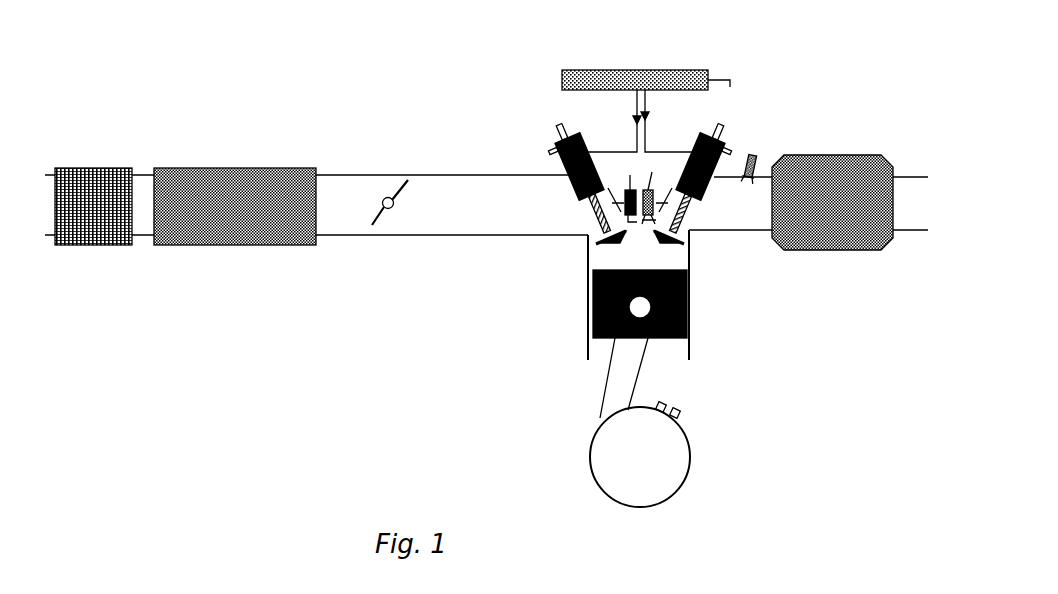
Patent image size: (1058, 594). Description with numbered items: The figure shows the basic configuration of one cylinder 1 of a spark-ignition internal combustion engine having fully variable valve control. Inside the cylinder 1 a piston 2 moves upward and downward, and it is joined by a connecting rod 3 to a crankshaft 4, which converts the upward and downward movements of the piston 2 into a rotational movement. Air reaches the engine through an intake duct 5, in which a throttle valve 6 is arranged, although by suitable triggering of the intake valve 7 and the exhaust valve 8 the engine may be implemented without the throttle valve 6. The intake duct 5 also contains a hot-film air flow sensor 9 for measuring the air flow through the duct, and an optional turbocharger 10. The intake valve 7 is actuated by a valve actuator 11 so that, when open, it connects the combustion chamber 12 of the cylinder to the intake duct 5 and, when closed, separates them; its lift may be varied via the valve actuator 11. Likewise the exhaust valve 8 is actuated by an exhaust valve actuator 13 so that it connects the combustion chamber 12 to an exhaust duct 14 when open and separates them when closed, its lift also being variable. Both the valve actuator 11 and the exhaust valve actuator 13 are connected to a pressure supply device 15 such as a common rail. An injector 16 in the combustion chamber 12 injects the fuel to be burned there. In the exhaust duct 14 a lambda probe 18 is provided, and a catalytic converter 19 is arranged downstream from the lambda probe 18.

The cylinder 1 is at (691, 290).
The piston 2 is at (615, 340).
The connecting rod 3 is at (634, 381).
The crankshaft 4 is at (690, 472).
The intake duct 5 is at (340, 171).
The throttle valve 6 is at (391, 212).
The intake valve 7 is at (597, 243).
The exhaust valve 8 is at (690, 217).
The hot-film air flow sensor 9 is at (105, 167).
The turbocharger 10 is at (210, 162).
The valve actuator 11 is at (556, 158).
The combustion chamber 12 is at (643, 240).
The exhaust valve actuator 13 is at (700, 152).
The exhaust duct 14 is at (907, 190).
The pressure supply device 15 is at (625, 70).
The injector 16 is at (662, 172).
The lambda probe 18 is at (760, 148).
The catalytic converter 19 is at (860, 253).